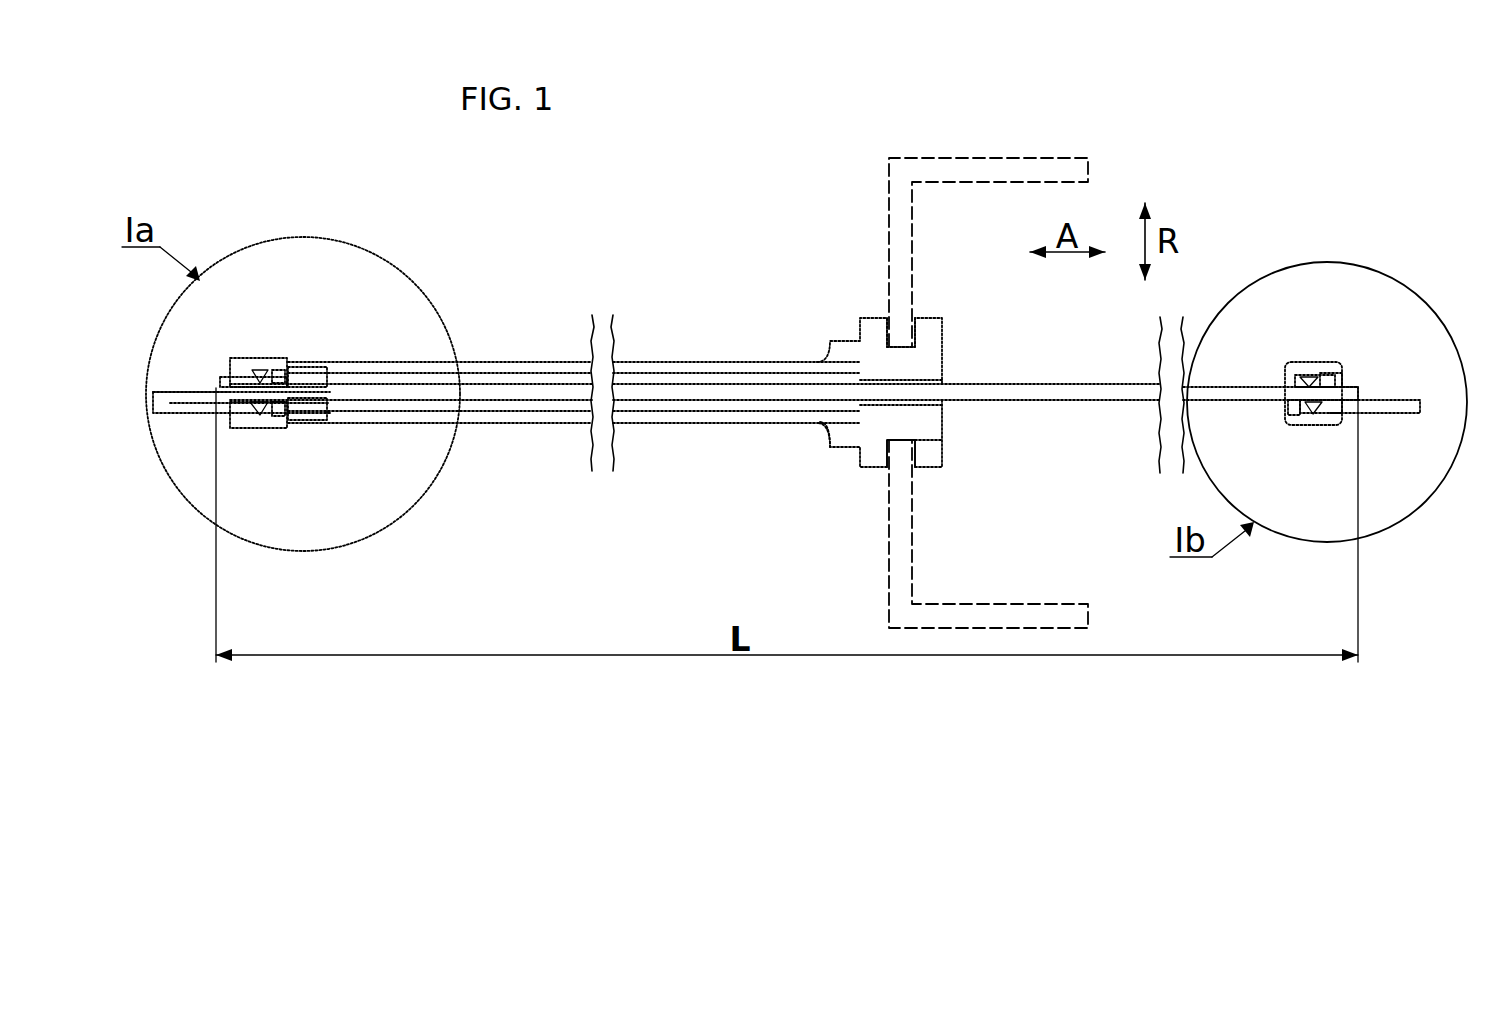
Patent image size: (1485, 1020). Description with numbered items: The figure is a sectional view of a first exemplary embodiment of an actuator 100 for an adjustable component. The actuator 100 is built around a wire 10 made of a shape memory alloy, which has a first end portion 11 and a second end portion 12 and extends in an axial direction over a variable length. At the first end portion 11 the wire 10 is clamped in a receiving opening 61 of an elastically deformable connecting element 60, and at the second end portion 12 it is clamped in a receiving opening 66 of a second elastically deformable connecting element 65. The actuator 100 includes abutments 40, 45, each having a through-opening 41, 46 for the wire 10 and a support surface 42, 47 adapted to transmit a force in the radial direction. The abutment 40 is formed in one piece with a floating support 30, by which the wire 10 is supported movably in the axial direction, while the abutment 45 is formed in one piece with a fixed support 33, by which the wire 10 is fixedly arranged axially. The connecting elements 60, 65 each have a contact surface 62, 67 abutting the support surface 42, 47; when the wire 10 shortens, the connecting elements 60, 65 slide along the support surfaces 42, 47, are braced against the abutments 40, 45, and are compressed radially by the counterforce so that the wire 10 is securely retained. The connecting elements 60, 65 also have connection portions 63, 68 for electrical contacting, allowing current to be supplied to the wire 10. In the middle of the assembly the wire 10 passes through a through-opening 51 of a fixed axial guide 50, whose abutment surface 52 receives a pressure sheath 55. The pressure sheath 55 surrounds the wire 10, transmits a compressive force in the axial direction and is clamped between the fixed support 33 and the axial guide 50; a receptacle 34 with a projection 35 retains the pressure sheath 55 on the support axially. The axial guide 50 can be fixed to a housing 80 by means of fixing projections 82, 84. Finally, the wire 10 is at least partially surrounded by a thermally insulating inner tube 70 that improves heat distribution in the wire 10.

The actuator 100 is at (764, 248).
The wire 10 is at (648, 405).
The first end portion 11 is at (1355, 390).
The second end portion 12 is at (217, 390).
The floating support 30 is at (1338, 360).
The fixed support 33 is at (281, 352).
The receptacle 34 is at (303, 407).
The projection 35 is at (312, 377).
The abutment 40 is at (1295, 360).
The through-opening 41 is at (1290, 410).
The support surface 42 is at (1316, 414).
The abutment 45 is at (264, 352).
The through-opening 46 is at (280, 407).
The support surface 47 is at (267, 413).
The axial guide 50 is at (934, 336).
The through-opening 51 is at (935, 405).
The abutment surface 52 is at (845, 428).
The pressure sheath 55 is at (698, 372).
The connecting element 60 is at (1346, 425).
The receiving opening 61 is at (1322, 413).
The contact surface 62 is at (1310, 375).
The connection portion 63 is at (1400, 411).
The connecting element 65 is at (245, 420).
The receiving opening 66 is at (250, 385).
The contact surface 67 is at (268, 377).
The connection portion 68 is at (193, 412).
The inner tube 70 is at (530, 378).
The housing 80 is at (922, 519).
The fixing projection 82 is at (893, 332).
The fixing projection 84 is at (900, 453).